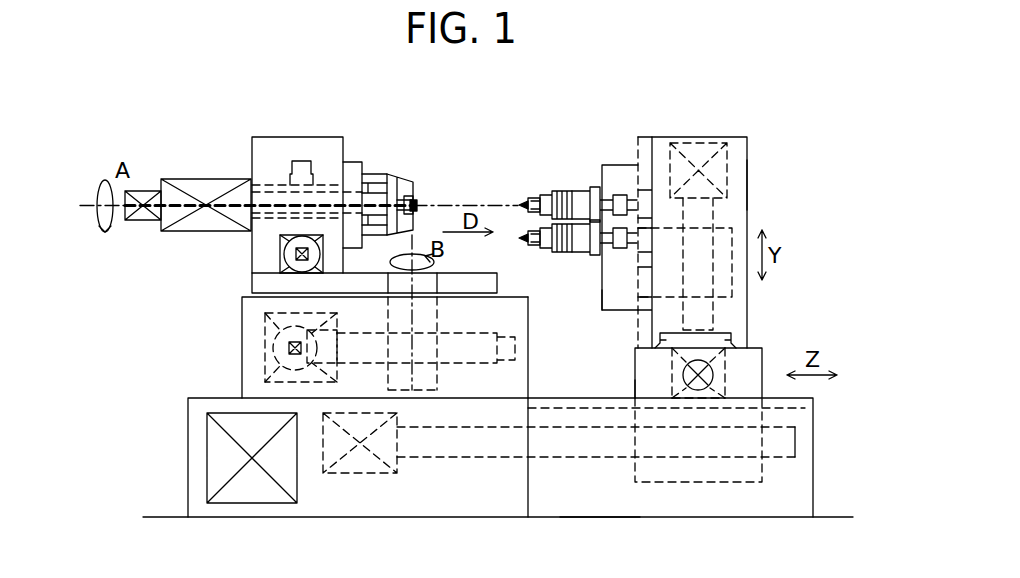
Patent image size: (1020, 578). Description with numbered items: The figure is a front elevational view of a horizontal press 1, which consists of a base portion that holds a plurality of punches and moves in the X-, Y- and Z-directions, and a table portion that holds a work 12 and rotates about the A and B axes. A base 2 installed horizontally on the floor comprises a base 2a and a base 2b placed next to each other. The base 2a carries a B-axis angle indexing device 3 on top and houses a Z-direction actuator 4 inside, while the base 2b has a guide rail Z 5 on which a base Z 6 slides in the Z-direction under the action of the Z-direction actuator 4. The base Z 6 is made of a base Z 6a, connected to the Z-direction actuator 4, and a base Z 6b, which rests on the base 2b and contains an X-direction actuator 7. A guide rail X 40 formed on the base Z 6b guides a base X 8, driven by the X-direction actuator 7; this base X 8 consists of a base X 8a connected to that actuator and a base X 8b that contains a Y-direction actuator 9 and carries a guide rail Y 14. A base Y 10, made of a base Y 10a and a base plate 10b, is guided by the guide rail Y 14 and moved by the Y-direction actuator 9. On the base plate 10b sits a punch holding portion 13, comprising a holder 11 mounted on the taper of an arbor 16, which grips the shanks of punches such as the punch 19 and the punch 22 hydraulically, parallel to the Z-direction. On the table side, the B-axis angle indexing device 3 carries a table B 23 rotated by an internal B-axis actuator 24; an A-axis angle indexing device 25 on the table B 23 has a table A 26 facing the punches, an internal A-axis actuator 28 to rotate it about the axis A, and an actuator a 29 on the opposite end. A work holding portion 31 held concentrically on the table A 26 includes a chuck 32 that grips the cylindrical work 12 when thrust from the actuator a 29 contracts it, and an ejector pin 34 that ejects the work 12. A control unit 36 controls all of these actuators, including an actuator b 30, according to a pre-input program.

The horizontal press 1 is at (143, 503).
The base 2 is at (197, 428).
The base 2a is at (448, 500).
The base 2b is at (602, 500).
The B-axis angle indexing device 3 is at (247, 327).
The Z-direction actuator 4 is at (362, 465).
The guide rail Z 5 is at (800, 405).
The base Z 6 is at (648, 362).
The base Z 6a is at (673, 465).
The base Z 6b is at (648, 388).
The X-direction actuator 7 is at (720, 372).
The base X 8 is at (738, 145).
The base X 8a is at (677, 340).
The base X 8b is at (738, 183).
The Y-direction actuator 9 is at (700, 145).
The base Y 10 is at (620, 165).
The base Y 10a is at (727, 233).
The base plate 10b is at (612, 295).
The holder 11 is at (540, 197).
The work 12 is at (415, 203).
The punch holding portion 13 is at (563, 191).
The guide rail Y 14 is at (647, 137).
The arbor 16 is at (586, 190).
The punch 19 is at (518, 202).
The punch 22 is at (522, 242).
The table B 23 is at (250, 283).
The B-axis actuator 24 is at (282, 347).
The A-axis angle indexing device 25 is at (265, 137).
The table A 26 is at (355, 162).
The A-axis actuator 28 is at (282, 253).
The actuator a 29 is at (205, 178).
The actuator b 30 is at (141, 190).
The work holding portion 31 is at (373, 175).
The chuck 32 is at (397, 185).
The ejector pin 34 is at (408, 203).
The control unit 36 is at (217, 457).
The guide rail X 40 is at (733, 338).